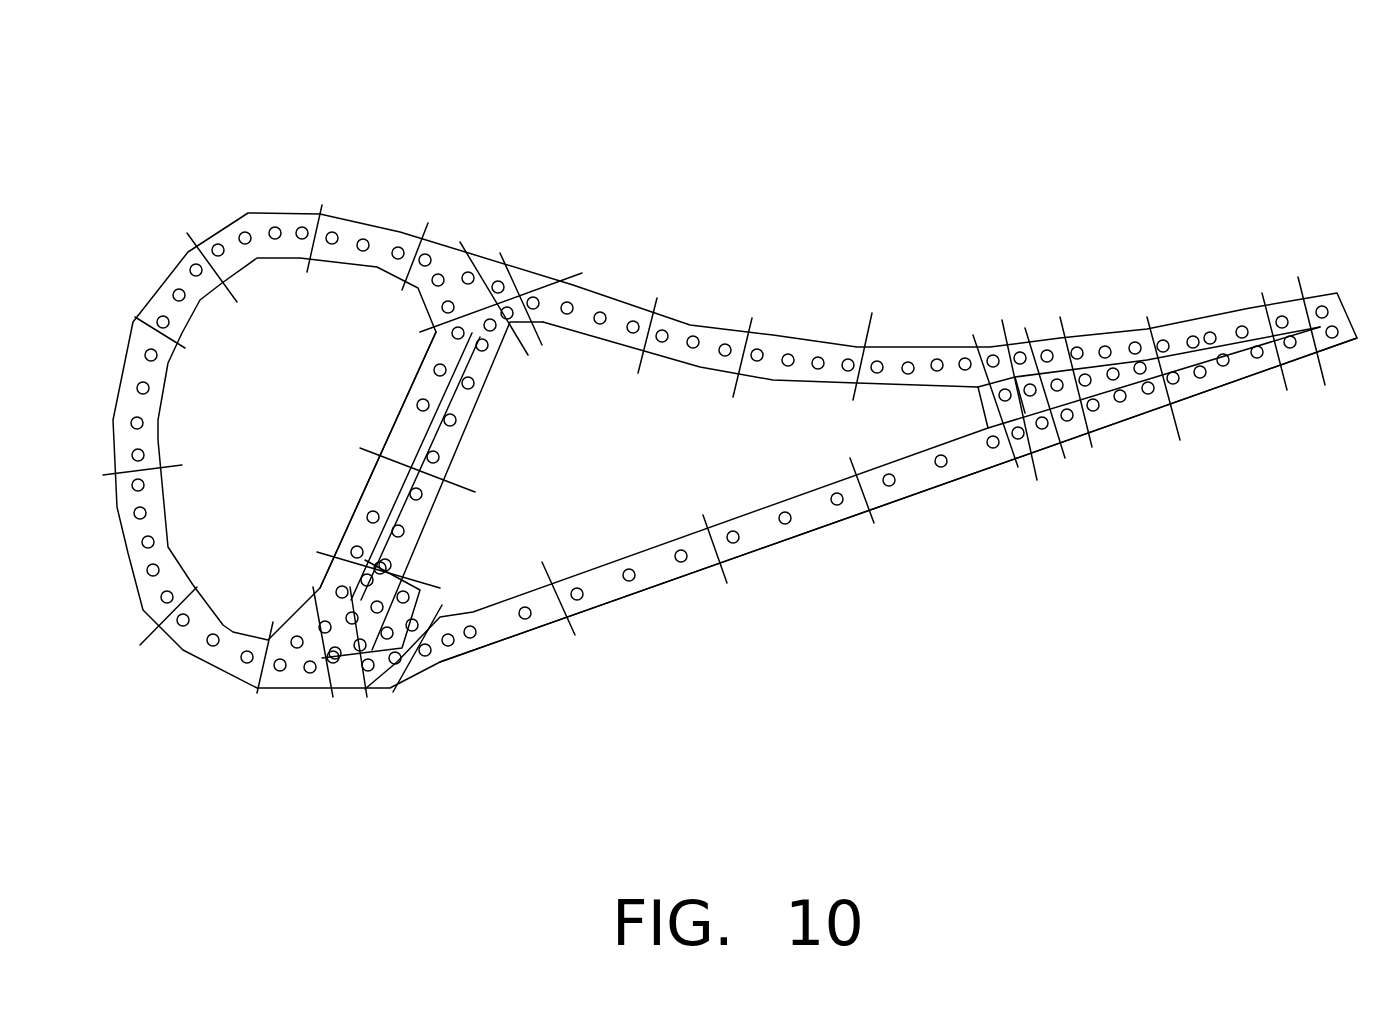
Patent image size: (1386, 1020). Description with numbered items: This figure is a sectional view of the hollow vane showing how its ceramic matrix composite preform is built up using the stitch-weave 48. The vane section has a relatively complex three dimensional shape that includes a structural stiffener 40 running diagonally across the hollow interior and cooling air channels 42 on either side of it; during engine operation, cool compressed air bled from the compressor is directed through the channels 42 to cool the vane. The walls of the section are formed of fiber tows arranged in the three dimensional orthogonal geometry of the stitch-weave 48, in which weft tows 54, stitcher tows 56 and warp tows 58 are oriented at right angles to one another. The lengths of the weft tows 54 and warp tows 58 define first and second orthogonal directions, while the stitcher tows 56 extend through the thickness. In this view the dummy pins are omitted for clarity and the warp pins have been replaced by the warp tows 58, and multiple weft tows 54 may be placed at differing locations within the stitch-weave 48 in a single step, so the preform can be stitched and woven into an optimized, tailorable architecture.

The structural stiffener 40 is at (470, 432).
The cooling air channels 42 is at (286, 426).
The stitch-weave 48 is at (1023, 95).
The weft tows 54 is at (918, 496).
The stitcher tows 56 is at (727, 573).
The warp tows 58 is at (634, 578).